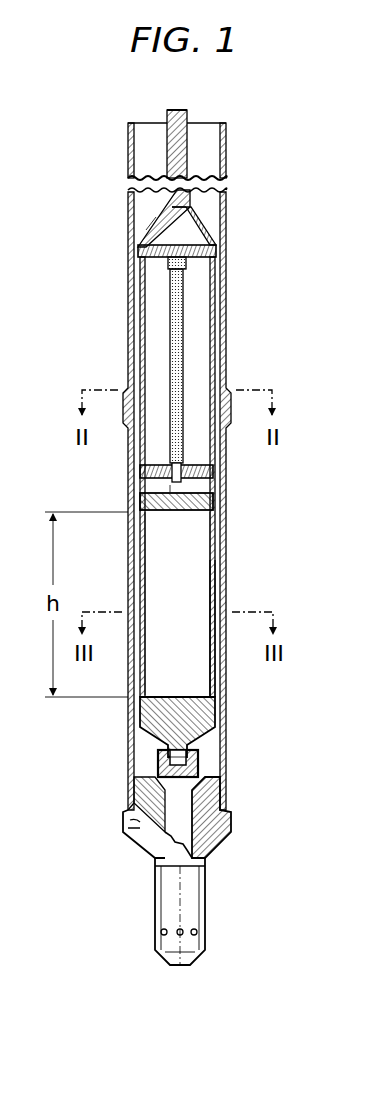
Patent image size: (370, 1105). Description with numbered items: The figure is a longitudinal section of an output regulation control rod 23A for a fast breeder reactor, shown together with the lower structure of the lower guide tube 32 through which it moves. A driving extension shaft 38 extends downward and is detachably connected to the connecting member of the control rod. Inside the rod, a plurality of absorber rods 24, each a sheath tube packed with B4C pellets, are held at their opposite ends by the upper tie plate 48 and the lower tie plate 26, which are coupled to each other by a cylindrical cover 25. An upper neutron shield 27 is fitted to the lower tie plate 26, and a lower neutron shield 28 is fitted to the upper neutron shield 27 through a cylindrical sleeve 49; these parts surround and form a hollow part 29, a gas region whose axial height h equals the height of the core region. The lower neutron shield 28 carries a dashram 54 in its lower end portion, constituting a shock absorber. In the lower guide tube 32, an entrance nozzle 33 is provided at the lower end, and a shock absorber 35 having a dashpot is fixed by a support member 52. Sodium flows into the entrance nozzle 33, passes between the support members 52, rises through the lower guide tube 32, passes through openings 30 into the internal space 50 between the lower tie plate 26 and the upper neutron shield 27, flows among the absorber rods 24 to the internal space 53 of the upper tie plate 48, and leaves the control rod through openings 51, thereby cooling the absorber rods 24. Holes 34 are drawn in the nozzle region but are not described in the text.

The output regulation control rod 23A is at (133, 546).
The absorber rod 24 is at (183, 362).
The cylindrical cover 25 is at (215, 283).
The lower tie plate 26 is at (146, 468).
The upper neutron shield 27 is at (214, 504).
The lower neutron shield 28 is at (203, 715).
The hollow part 29 is at (197, 586).
The openings 30 is at (142, 483).
The lower guide tube 32 is at (228, 152).
The entrance nozzle 33 is at (206, 900).
The nozzle holes 34 is at (161, 932).
The shock absorber 35 is at (198, 772).
The driving extension shaft 38 is at (188, 146).
The upper tie plate 48 is at (218, 251).
The cylindrical sleeve 49 is at (215, 663).
The internal space 50 is at (170, 493).
The openings 51 is at (150, 228).
The support member 52 is at (207, 797).
The internal space 53 is at (200, 222).
The dashram 54 is at (165, 764).